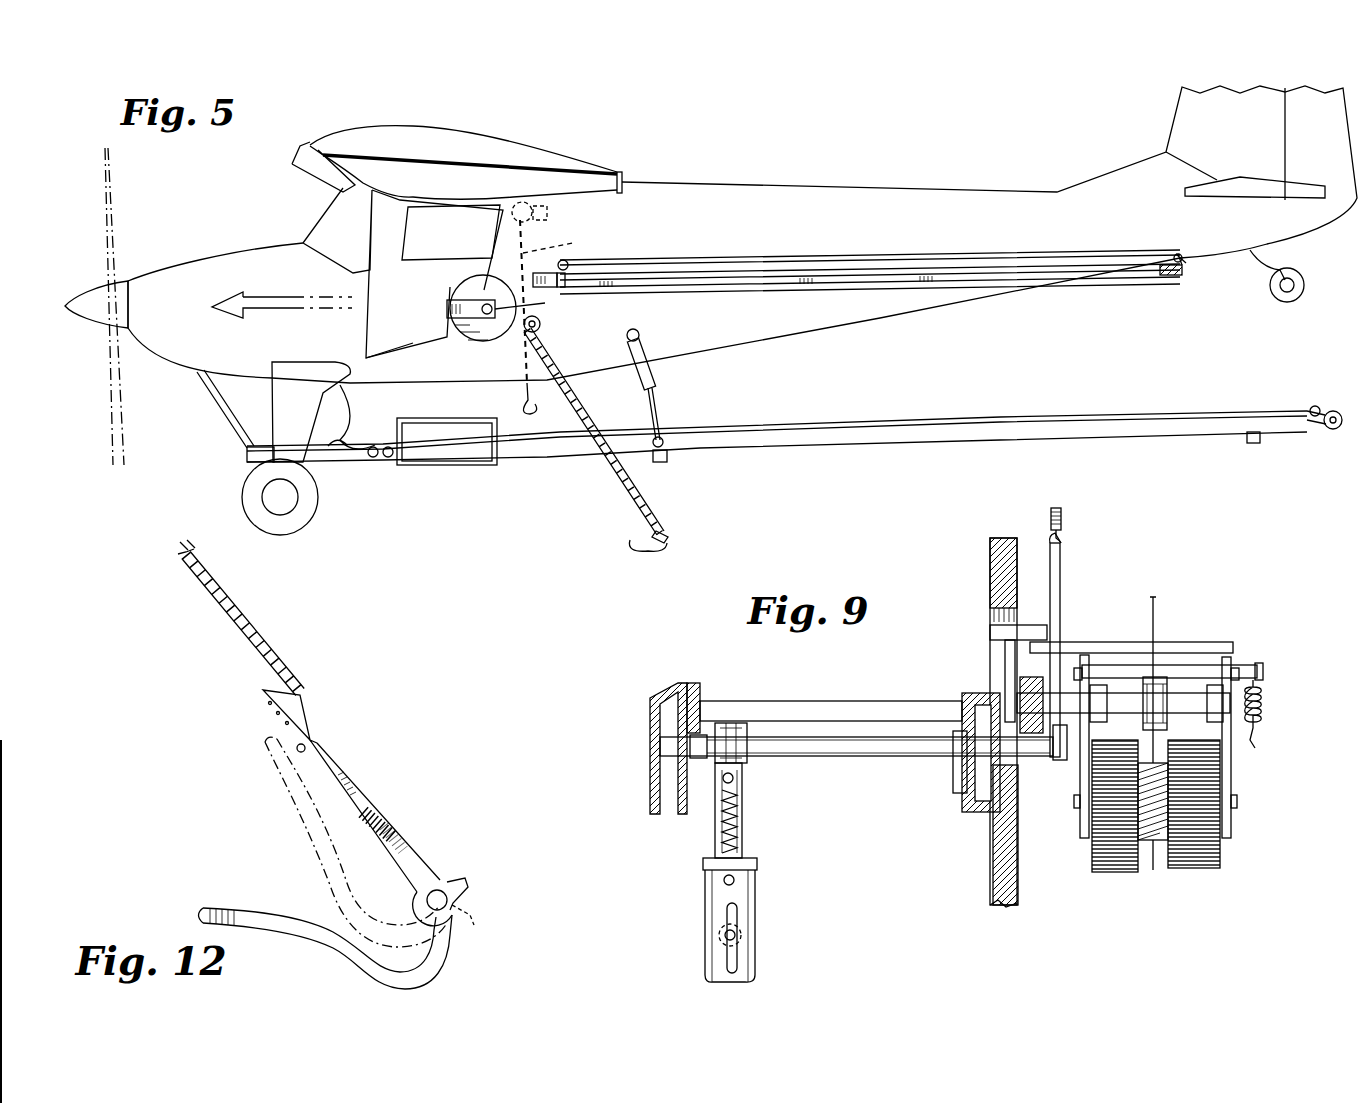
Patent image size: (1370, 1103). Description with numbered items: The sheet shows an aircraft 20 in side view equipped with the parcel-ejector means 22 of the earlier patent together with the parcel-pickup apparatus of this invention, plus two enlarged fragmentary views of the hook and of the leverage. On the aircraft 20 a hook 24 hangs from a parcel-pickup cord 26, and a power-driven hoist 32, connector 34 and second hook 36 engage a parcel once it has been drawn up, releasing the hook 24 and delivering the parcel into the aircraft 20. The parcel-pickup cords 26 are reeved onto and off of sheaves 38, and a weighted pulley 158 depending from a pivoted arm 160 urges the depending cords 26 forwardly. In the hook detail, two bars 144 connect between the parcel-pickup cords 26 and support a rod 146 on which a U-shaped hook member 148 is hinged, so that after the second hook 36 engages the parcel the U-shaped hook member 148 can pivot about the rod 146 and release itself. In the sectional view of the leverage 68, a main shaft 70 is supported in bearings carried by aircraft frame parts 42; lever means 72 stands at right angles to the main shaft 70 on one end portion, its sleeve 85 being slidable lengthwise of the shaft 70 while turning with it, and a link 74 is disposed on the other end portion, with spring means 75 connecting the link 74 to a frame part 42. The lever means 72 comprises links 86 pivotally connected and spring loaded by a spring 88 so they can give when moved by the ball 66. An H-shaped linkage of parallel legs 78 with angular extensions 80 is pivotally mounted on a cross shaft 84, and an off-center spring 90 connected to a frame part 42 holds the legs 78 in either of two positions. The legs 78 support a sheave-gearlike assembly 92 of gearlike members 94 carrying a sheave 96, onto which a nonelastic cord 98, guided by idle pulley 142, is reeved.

In FIG. 5, the aircraft 20 is at (688, 190).
In FIG. 5, the parcel-ejector means 22 is at (785, 442).
In FIG. 5, the hook 24 is at (668, 546).
In FIG. 12, the hook 24 is at (364, 863).
In FIG. 5, the parcel-pickup cord 26 is at (613, 482).
In FIG. 12, the parcel-pickup cord 26 is at (240, 626).
In FIG. 5, the power-driven hoist 32 is at (550, 220).
In FIG. 5, the connector 34 is at (565, 239).
In FIG. 5, the second hook 36 is at (535, 412).
In FIG. 5, the sheave 38 is at (480, 330).
In FIG. 9, the aircraft frame part 42 is at (660, 793).
In FIG. 9, the ball 66 is at (747, 935).
In FIG. 9, the leverage 68 is at (776, 821).
In FIG. 9, the main shaft 70 is at (823, 747).
In FIG. 9, the lever means 72 is at (762, 905).
In FIG. 9, the link 74 is at (1056, 667).
In FIG. 9, the spring means 75 is at (1065, 523).
In FIG. 9, the legs 78 is at (1080, 770).
In FIG. 9, the extensions 80 is at (1082, 668).
In FIG. 9, the cross shaft 84 is at (1187, 700).
In FIG. 9, the sleeve 85 is at (733, 737).
In FIG. 9, the links 86 is at (737, 803).
In FIG. 9, the spring 88 is at (733, 827).
In FIG. 9, the off-center spring 90 is at (1262, 705).
In FIG. 9, the sheave-gearlike assembly 92 is at (1189, 834).
In FIG. 9, the gearlike members 94 is at (1106, 870).
In FIG. 9, the sheave 96 is at (1147, 866).
In FIG. 9, the nonelastic cord 98 is at (1156, 607).
In FIG. 9, the idle pulley 142 is at (1157, 697).
In FIG. 12, the bars 144 is at (390, 822).
In FIG. 12, the rod 146 is at (443, 907).
In FIG. 12, the U-shaped hook member 148 is at (363, 920).
In FIG. 5, the weighted pulley 158 is at (543, 327).
In FIG. 5, the pivoted arm 160 is at (523, 310).